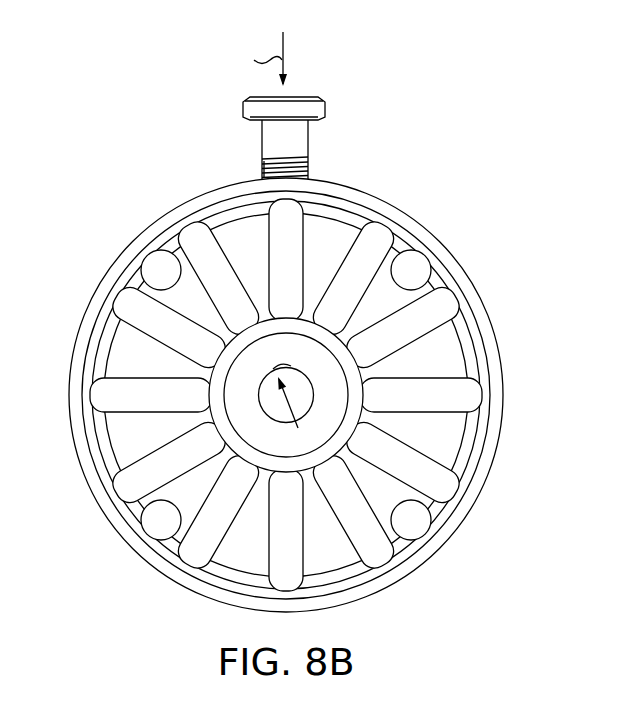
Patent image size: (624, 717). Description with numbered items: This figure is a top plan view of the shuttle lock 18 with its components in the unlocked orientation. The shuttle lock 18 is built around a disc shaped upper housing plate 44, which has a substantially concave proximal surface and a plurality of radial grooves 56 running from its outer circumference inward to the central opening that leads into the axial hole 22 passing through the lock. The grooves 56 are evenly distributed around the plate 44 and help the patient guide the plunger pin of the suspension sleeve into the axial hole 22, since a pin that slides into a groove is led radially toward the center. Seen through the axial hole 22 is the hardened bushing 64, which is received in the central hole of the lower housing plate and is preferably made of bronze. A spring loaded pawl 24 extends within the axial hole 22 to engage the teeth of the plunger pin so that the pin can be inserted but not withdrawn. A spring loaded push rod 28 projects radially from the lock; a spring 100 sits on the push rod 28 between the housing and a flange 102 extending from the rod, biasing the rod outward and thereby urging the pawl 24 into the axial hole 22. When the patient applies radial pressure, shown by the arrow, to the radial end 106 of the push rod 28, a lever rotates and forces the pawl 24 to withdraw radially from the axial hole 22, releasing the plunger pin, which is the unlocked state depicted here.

The shuttle lock 18 is at (138, 178).
The axial hole 22 is at (233, 417).
The spring loaded pawl 24 is at (280, 365).
The spring loaded push rod 28 is at (308, 137).
The upper housing plate 44 is at (497, 333).
The radial grooves 56 is at (380, 230).
The hardened bushing 64 is at (253, 436).
The spring 100 is at (310, 167).
The flange 102 is at (262, 170).
The radial end 106 is at (302, 97).